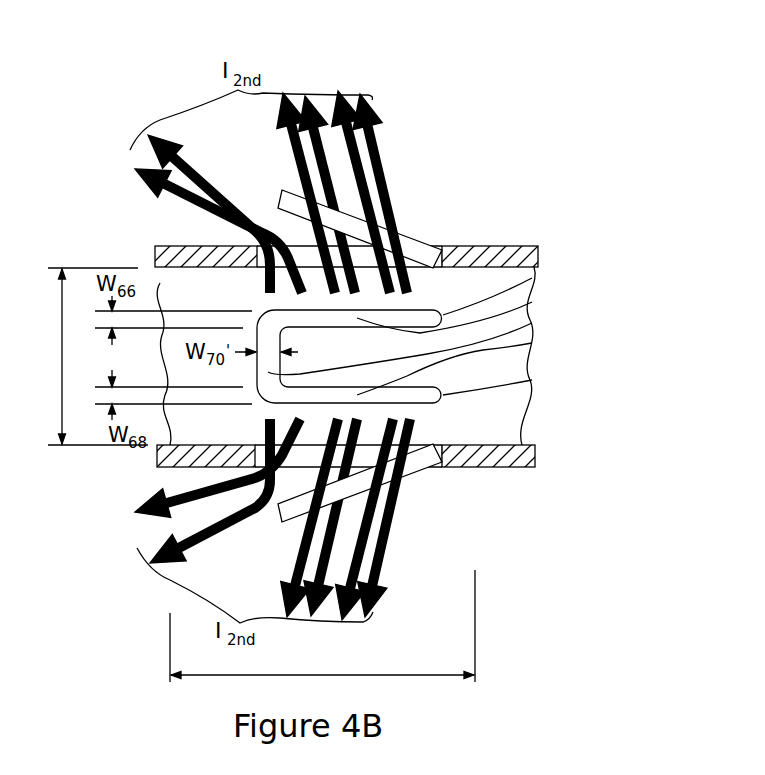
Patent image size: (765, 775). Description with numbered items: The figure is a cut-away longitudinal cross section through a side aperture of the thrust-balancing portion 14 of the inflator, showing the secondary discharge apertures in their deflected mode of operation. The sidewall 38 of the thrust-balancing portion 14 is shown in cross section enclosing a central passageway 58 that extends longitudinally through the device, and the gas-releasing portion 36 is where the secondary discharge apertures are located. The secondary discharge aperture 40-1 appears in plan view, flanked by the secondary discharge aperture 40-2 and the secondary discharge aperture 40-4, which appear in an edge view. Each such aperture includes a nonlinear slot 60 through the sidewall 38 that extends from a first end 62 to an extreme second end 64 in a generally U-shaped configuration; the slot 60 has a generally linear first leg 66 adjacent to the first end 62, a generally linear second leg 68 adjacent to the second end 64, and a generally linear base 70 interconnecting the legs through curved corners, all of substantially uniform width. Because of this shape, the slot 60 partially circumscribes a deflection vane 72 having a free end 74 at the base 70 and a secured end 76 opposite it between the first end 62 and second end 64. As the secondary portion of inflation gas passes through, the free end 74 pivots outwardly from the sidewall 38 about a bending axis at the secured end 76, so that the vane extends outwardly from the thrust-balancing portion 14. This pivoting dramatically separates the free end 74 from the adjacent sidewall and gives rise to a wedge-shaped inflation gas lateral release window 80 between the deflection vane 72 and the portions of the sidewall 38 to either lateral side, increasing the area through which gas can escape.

The thrust-balancing portion 14 is at (551, 114).
The gas-releasing portion 36 is at (322, 626).
The sidewall 38 is at (166, 286).
The secondary discharge aperture 40-1 is at (430, 374).
The secondary discharge aperture 40-2 is at (408, 208).
The secondary discharge aperture 40-4 is at (404, 514).
The central passageway 58 is at (89, 356).
The nonlinear slot 60 is at (466, 359).
The first end 62 is at (530, 278).
The second end 64 is at (530, 380).
The first leg 66 is at (530, 302).
The second leg 68 is at (530, 343).
The base 70 is at (530, 323).
The deflection vane 72 is at (400, 359).
The free end 74 is at (296, 231).
The secured end 76 is at (440, 247).
The inflation gas lateral release window 80 is at (288, 355).